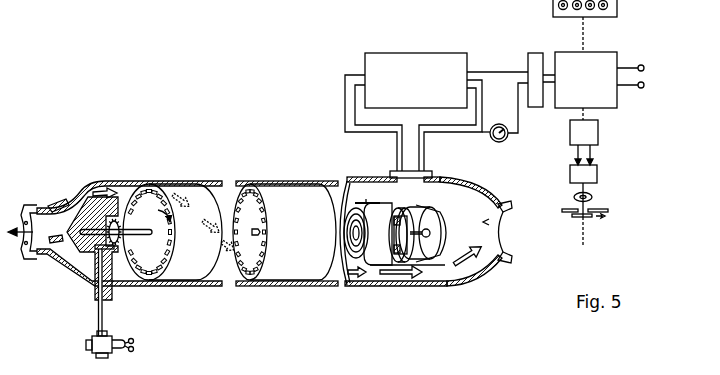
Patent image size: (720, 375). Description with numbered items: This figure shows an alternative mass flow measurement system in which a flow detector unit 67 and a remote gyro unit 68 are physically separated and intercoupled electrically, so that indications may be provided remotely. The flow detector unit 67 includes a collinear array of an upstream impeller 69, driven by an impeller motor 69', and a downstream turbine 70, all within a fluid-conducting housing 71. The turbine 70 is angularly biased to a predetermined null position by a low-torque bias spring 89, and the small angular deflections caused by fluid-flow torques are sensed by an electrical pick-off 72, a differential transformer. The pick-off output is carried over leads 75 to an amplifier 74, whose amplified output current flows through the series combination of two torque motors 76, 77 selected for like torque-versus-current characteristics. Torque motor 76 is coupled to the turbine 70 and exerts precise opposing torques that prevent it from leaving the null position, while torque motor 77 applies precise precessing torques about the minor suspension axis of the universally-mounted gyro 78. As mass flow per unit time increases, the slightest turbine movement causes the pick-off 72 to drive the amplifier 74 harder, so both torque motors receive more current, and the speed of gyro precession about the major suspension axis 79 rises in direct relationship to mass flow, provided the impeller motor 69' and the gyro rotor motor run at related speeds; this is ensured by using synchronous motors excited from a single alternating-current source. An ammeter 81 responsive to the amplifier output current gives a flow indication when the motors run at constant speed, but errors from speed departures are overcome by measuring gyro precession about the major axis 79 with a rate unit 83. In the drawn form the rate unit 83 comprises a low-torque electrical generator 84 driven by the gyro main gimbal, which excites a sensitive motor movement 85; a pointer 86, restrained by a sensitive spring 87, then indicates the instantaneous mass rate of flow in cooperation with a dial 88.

The flow detector unit 67 is at (256, 175).
The remote gyro unit 68 is at (626, 54).
The upstream impeller 69 is at (158, 232).
The impeller motor 69' is at (118, 303).
The downstream turbine 70 is at (323, 268).
The fluid-conducting housing 71 is at (181, 180).
The electrical pick-off 72 is at (393, 203).
The amplifier 74 is at (366, 64).
The leads 75 is at (352, 115).
The torque motor 76 is at (442, 226).
The torque motor 77 is at (528, 62).
The gyro 78 is at (606, 109).
The major suspension axis 79 is at (586, 242).
The ammeter 81 is at (506, 140).
The rate unit 83 is at (558, 187).
The low-torque electrical generator 84 is at (598, 133).
The sensitive motor movement 85 is at (598, 176).
The pointer 86 is at (589, 216).
The sensitive spring 87 is at (592, 193).
The dial 88 is at (572, 216).
The low-torque bias spring 89 is at (372, 265).